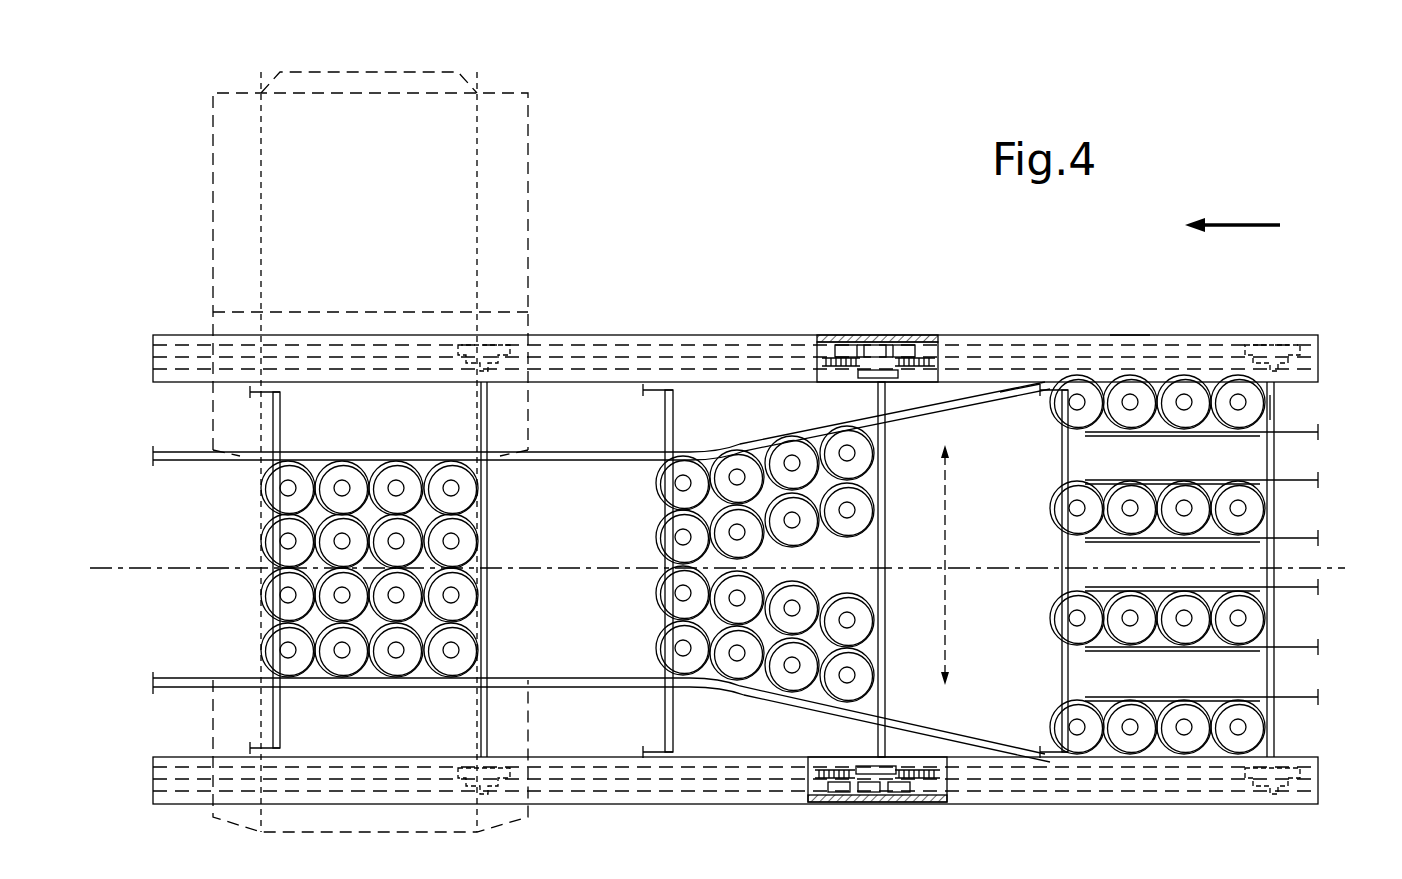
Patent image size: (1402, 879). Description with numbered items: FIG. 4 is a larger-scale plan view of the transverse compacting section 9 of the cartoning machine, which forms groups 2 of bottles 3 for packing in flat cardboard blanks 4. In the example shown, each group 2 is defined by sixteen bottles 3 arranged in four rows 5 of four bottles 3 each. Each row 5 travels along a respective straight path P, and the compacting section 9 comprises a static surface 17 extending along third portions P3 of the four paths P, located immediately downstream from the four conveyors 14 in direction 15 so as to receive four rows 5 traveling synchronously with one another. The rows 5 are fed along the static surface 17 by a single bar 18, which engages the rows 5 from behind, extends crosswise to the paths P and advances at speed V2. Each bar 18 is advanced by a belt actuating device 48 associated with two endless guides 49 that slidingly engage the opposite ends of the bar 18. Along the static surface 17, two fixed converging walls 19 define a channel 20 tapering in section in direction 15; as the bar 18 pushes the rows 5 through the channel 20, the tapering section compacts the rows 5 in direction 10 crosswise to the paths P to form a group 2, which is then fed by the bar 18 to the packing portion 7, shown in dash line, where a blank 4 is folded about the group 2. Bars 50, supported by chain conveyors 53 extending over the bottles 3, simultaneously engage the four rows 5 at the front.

The group 2 is at (367, 698).
The bottle 3 is at (451, 666).
The flat cardboard blank 4 is at (500, 246).
The row 5 is at (1283, 408).
The packing portion 7 is at (562, 104).
The transverse compacting section 9 is at (881, 282).
The direction 10 is at (947, 542).
The conveyor 14 is at (1352, 438).
The direction 15 is at (1225, 224).
The static surface 17 is at (1012, 722).
The bar 18 is at (488, 552).
The fixed converging wall 19 is at (962, 392).
The channel 20 is at (1001, 396).
The belt actuating device 48 is at (880, 331).
The endless guide 49 is at (918, 342).
The bar 50 is at (281, 432).
The chain conveyor 53 is at (628, 396).
The path P is at (1320, 560).
The third portion P3 is at (1132, 328).